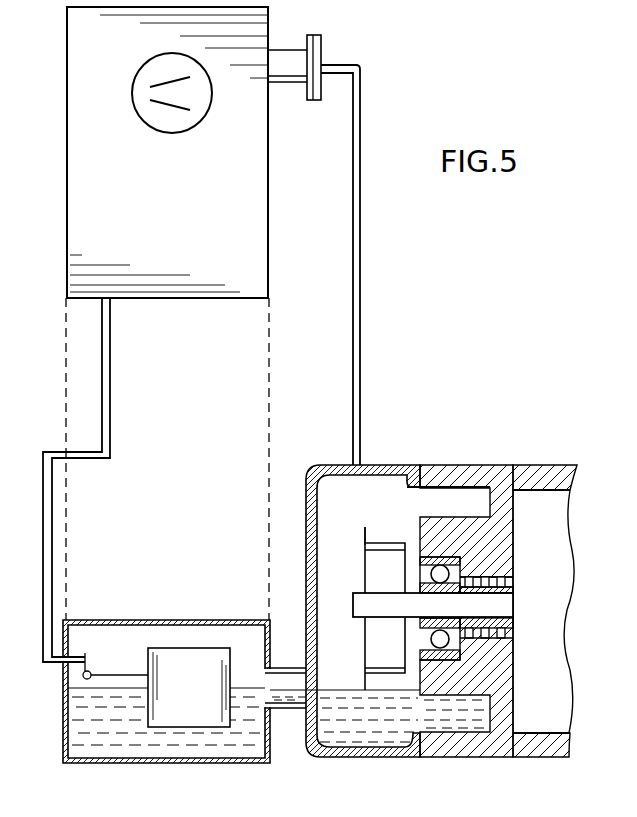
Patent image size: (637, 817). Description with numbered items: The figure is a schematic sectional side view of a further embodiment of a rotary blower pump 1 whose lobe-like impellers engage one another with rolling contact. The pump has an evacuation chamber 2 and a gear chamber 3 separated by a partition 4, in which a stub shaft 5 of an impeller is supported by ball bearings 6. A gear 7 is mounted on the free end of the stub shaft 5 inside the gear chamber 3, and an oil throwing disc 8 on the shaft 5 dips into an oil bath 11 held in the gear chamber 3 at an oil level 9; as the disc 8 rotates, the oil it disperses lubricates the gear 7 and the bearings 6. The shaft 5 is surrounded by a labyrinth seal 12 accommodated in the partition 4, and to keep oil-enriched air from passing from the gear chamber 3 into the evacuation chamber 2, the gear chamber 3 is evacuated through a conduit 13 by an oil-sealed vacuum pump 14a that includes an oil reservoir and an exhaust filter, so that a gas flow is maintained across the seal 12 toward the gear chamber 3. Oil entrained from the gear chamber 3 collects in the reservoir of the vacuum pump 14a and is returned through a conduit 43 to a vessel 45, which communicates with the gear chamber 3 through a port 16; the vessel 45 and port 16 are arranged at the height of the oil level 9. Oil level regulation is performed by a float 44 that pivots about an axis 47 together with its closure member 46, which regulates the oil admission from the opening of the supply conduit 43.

The rotary blower pump 1 is at (464, 458).
The evacuation chamber 2 is at (548, 518).
The gear chamber 3 is at (334, 501).
The partition 4 is at (438, 735).
The stub shaft 5 is at (355, 602).
The ball bearing 6 is at (440, 556).
The gear 7 is at (383, 562).
The oil throwing disc 8 is at (363, 532).
The oil level 9 is at (343, 682).
The oil bath 11 is at (375, 728).
The labyrinth seal 12 is at (521, 576).
The conduit 13 is at (361, 242).
The vacuum pump 14a is at (268, 207).
The port 16 is at (286, 712).
The conduit 43 is at (105, 423).
The float 44 is at (188, 652).
The vessel 45 is at (123, 612).
The closure member 46 is at (85, 653).
The axis 47 is at (83, 678).